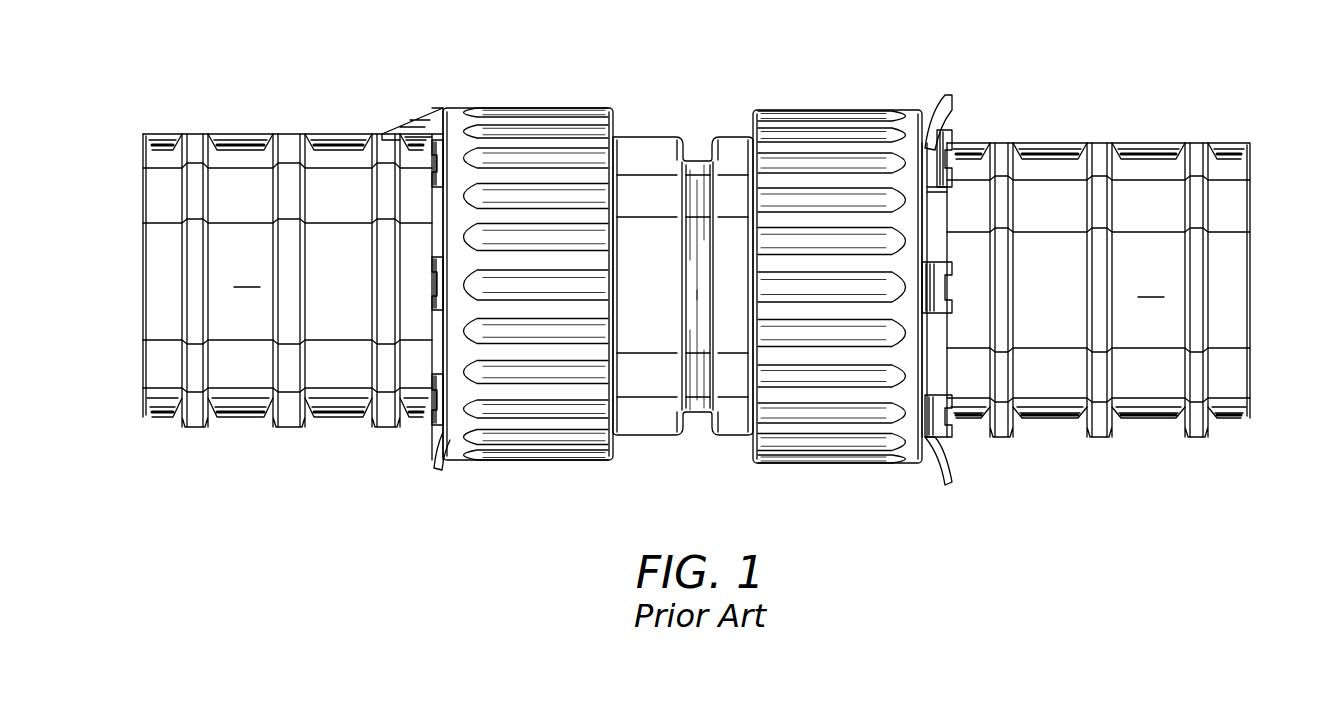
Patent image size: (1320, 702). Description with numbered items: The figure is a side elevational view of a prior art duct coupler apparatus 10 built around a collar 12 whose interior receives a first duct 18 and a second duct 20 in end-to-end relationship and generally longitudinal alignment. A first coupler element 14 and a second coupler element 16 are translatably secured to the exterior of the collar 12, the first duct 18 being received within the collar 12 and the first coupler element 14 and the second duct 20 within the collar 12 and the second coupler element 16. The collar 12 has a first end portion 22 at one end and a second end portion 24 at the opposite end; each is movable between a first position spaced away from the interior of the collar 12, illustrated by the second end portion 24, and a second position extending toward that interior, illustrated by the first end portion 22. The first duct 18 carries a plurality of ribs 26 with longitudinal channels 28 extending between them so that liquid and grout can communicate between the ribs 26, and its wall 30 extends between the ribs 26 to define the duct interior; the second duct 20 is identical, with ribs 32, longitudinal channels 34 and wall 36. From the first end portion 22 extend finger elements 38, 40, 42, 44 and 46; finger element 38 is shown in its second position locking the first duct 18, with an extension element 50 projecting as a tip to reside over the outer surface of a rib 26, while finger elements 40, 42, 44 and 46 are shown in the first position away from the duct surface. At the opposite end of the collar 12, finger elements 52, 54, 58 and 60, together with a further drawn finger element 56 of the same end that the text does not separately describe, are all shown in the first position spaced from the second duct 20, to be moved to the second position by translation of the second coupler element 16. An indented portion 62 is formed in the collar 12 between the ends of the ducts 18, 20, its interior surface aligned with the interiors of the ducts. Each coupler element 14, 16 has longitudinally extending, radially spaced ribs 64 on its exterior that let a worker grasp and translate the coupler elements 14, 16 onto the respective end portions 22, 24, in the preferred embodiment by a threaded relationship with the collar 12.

The coupler apparatus 10 is at (940, 43).
The collar 12 is at (662, 136).
The first coupler element 14 is at (546, 108).
The second coupler element 16 is at (832, 110).
The first duct 18 is at (253, 386).
The second duct 20 is at (1047, 400).
The first end portion 22 is at (420, 112).
The second end portion 24 is at (954, 135).
The ribs 26 is at (202, 133).
The longitudinal channels 28 is at (330, 138).
The wall 30 is at (293, 280).
The ribs 32 is at (1003, 143).
The longitudinal channels 34 is at (1075, 143).
The wall 36 is at (1098, 280).
The finger element 38 is at (420, 125).
The finger element 40 is at (440, 172).
The finger element 42 is at (440, 282).
The finger element 44 is at (437, 420).
The finger element 46 is at (443, 447).
The extension element 50 is at (396, 133).
The finger element 52 is at (950, 96).
The finger element 54 is at (958, 186).
The latch tab 56 is at (950, 283).
The finger element 58 is at (948, 437).
The finger element 60 is at (950, 471).
The indented portion 62 is at (698, 420).
The ribs 64 is at (596, 282).